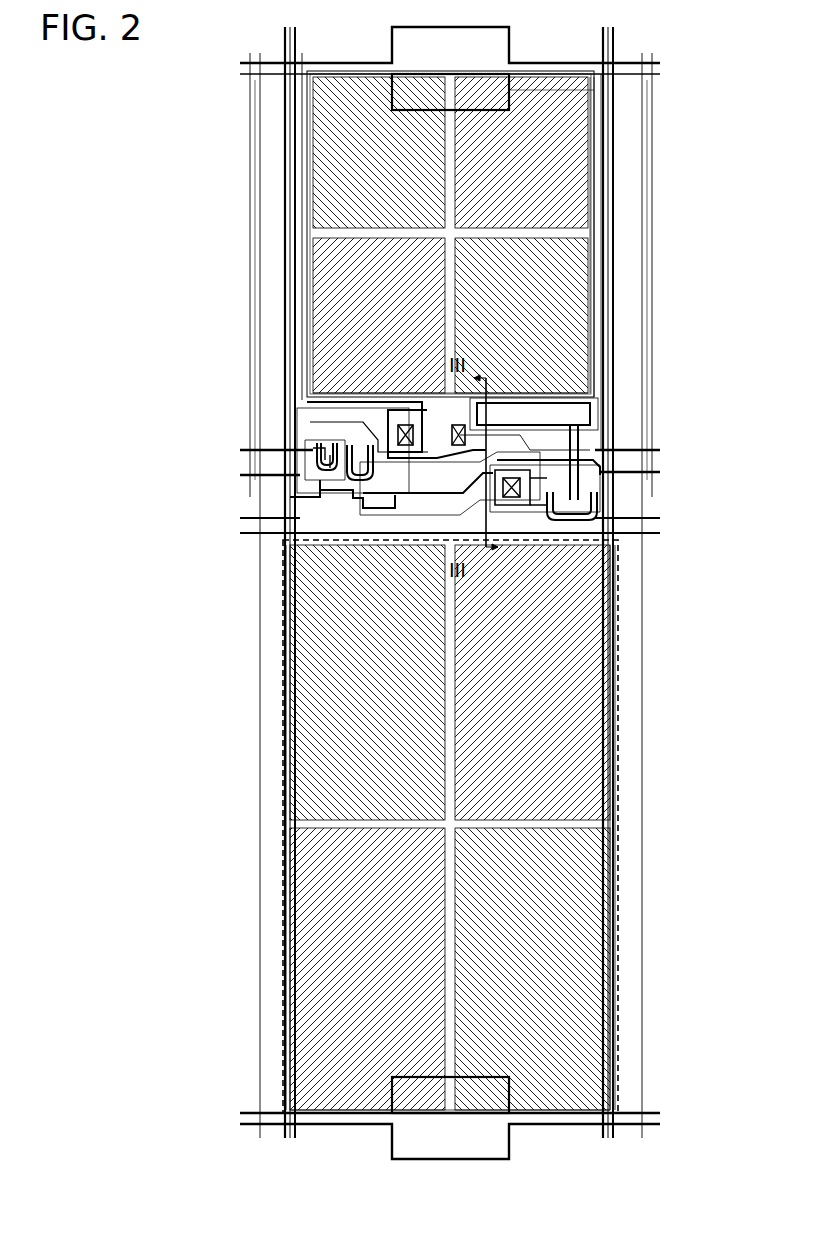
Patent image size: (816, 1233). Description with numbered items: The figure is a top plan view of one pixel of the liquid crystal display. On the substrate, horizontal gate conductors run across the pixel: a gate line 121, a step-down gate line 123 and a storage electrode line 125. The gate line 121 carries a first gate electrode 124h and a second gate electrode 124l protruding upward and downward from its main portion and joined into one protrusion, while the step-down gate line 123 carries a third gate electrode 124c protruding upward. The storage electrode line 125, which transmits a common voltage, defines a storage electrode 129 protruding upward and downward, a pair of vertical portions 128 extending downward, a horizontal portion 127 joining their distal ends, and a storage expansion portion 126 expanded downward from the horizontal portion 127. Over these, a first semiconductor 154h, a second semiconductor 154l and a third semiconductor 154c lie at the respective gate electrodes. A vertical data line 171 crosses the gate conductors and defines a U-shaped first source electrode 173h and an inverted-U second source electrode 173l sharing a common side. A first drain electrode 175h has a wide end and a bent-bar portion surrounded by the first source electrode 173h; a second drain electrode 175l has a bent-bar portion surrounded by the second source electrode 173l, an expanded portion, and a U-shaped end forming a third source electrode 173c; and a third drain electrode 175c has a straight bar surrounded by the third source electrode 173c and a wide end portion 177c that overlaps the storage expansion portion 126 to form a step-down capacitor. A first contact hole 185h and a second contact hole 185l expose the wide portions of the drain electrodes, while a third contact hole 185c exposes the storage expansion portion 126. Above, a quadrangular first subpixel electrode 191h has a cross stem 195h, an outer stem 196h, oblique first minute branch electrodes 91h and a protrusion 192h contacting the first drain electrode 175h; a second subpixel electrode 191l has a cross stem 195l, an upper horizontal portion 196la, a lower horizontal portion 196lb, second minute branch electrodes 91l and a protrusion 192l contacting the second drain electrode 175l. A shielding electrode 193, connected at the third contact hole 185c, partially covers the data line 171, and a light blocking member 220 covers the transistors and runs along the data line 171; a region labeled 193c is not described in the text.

The gate line 121 is at (655, 441).
The step-down gate line 123 is at (660, 520).
The second gate electrode 124l is at (335, 440).
The first gate electrode 124h is at (315, 485).
The third gate electrode 124c is at (597, 503).
The storage electrode line 125 is at (548, 71).
The storage expansion portion 126 is at (590, 450).
The horizontal portion 127 is at (300, 420).
The vertical portions 128 is at (594, 178).
The storage electrode 129 is at (509, 90).
The first semiconductor 154h is at (305, 440).
The second semiconductor 154l is at (365, 510).
The third semiconductor 154c is at (568, 512).
The data line 171 is at (285, 192).
The first source electrode 173h is at (300, 497).
The second source electrode 173l is at (388, 430).
The third source electrode 173c is at (578, 505).
The first drain electrode 175h is at (313, 452).
The second drain electrode 175l is at (363, 495).
The third drain electrode 175c is at (578, 480).
The wide end portion 177c is at (570, 425).
The first contact hole 185h is at (405, 446).
The second contact hole 185l is at (512, 497).
The third contact hole 185c is at (458, 425).
The first subpixel electrode 191h is at (121, 766).
The second subpixel electrode 191l is at (121, 894).
The protrusion 192h is at (350, 403).
The protrusion 192l is at (515, 547).
The shielding electrode 193 is at (260, 245).
The edge portion 193c is at (598, 415).
The cross stem 195h is at (580, 208).
The cross stem 195l is at (560, 830).
The outer stem 196h is at (594, 275).
The upper horizontal portion 196la is at (530, 522).
The lower horizontal portion 196lb is at (568, 1115).
The light blocking member 220 is at (290, 147).
The first minute branch electrode 91h is at (570, 300).
The second minute branch electrode 91l is at (285, 724).